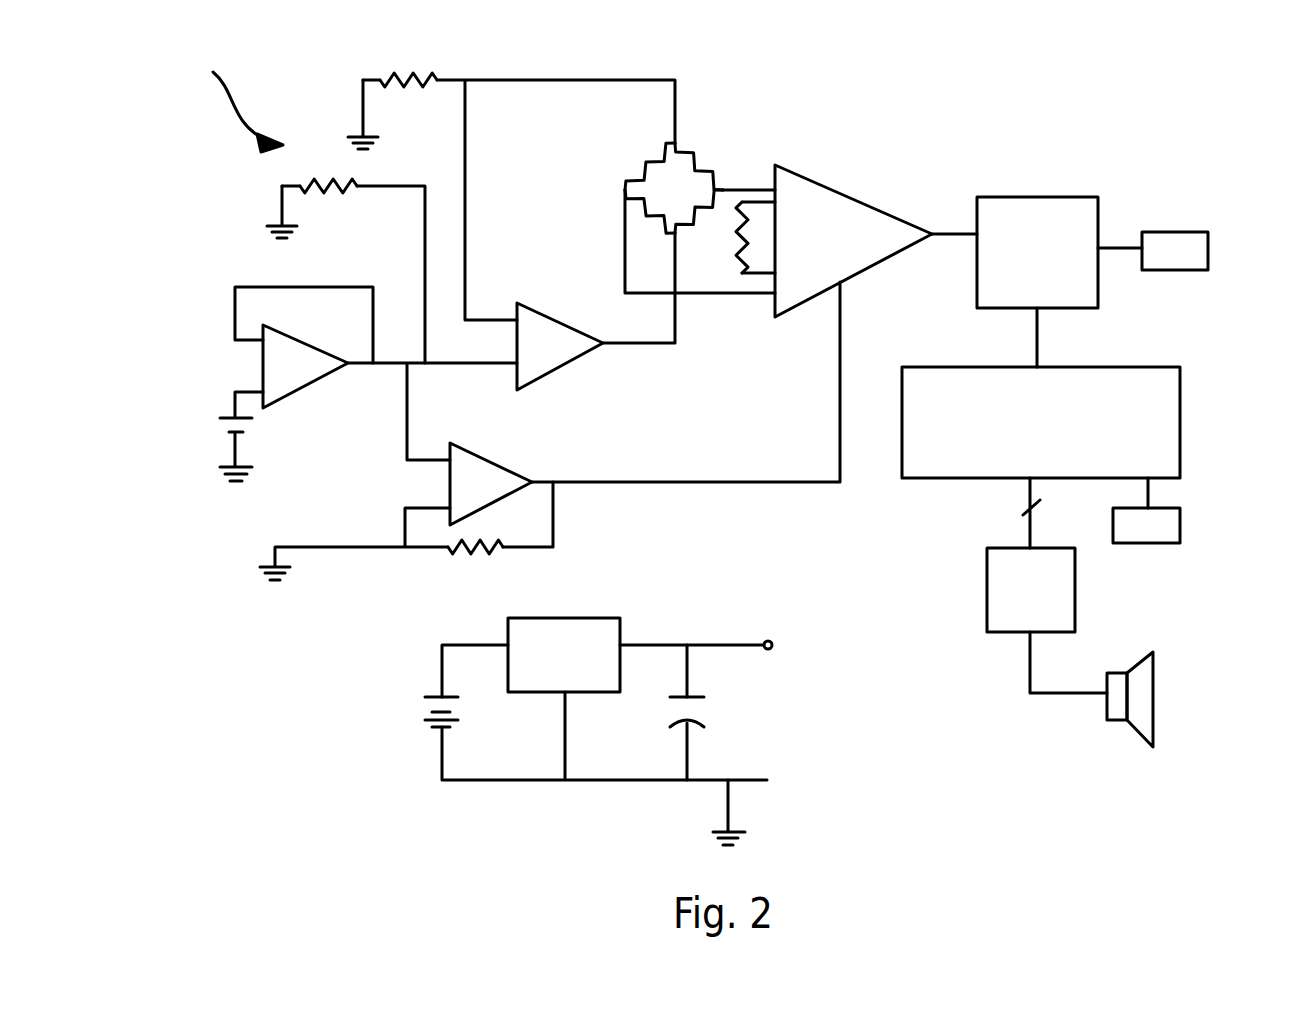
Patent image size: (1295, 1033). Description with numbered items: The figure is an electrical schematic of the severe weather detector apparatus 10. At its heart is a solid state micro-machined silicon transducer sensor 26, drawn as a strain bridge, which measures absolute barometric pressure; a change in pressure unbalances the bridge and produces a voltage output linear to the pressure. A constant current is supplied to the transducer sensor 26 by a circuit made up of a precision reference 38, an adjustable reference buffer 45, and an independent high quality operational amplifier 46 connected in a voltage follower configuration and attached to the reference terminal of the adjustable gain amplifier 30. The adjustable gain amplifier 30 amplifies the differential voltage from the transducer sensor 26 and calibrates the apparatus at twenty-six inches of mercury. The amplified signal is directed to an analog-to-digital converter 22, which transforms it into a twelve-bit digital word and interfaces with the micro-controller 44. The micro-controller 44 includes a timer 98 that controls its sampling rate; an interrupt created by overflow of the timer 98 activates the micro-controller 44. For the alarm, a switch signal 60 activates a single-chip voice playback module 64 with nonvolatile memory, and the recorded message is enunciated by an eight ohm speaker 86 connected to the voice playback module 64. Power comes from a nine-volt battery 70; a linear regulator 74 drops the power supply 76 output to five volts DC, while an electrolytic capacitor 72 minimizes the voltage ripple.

The severe weather detector apparatus 10 is at (232, 70).
The analog-to-digital converter 22 is at (1035, 230).
The transducer sensor 26 is at (682, 182).
The adjustable gain amplifier 30 is at (830, 213).
The precision reference 38 is at (290, 376).
The micro-controller 44 is at (1145, 415).
The adjustable reference buffer 45 is at (482, 480).
The operational amplifier 46 is at (557, 340).
The switch signal 60 is at (1028, 505).
The voice playback module 64 is at (1007, 583).
The battery 70 is at (428, 720).
The electrolytic capacitor 72 is at (718, 710).
The linear regulator 74 is at (604, 640).
The power supply 76 is at (770, 641).
The speaker 86 is at (1145, 700).
The timer 98 is at (1162, 523).